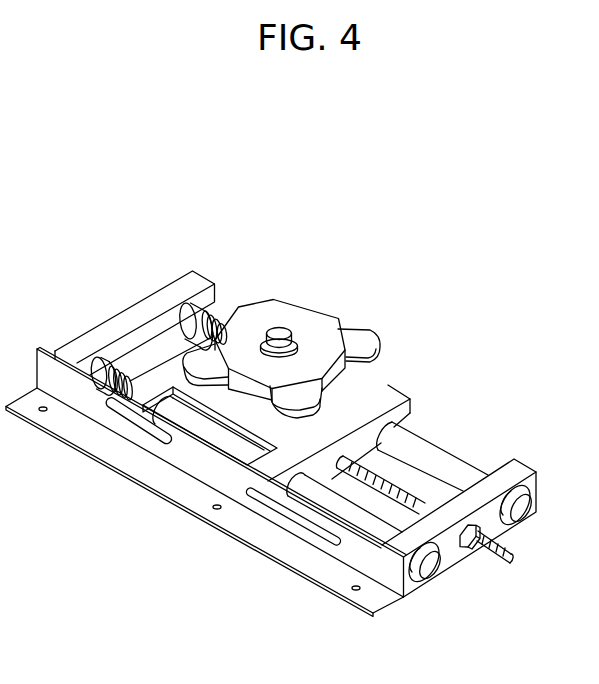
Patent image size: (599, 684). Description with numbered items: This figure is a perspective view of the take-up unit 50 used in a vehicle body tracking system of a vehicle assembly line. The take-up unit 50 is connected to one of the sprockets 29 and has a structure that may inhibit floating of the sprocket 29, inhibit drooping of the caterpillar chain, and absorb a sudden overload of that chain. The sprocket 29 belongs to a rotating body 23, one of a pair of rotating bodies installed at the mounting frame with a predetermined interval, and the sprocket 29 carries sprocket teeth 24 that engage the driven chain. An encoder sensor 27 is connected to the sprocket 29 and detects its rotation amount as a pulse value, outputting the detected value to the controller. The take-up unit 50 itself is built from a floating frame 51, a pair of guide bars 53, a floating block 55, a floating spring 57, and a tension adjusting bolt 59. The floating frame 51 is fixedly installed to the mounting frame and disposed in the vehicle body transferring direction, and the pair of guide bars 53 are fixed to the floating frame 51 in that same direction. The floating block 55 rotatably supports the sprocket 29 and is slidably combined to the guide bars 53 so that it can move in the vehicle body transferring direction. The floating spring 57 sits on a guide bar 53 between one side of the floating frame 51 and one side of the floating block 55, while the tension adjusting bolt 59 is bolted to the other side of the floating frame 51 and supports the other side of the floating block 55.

The rotating body 23 is at (311, 303).
The sprocket teeth 24 is at (368, 337).
The encoder sensor 27 is at (278, 327).
The sprocket 29 is at (323, 323).
The take-up unit 50 is at (487, 420).
The floating frame 51 is at (123, 322).
The guide bar 53 is at (415, 443).
The floating block 55 is at (187, 510).
The floating spring 57 is at (222, 320).
The tension adjusting bolt 59 is at (494, 565).